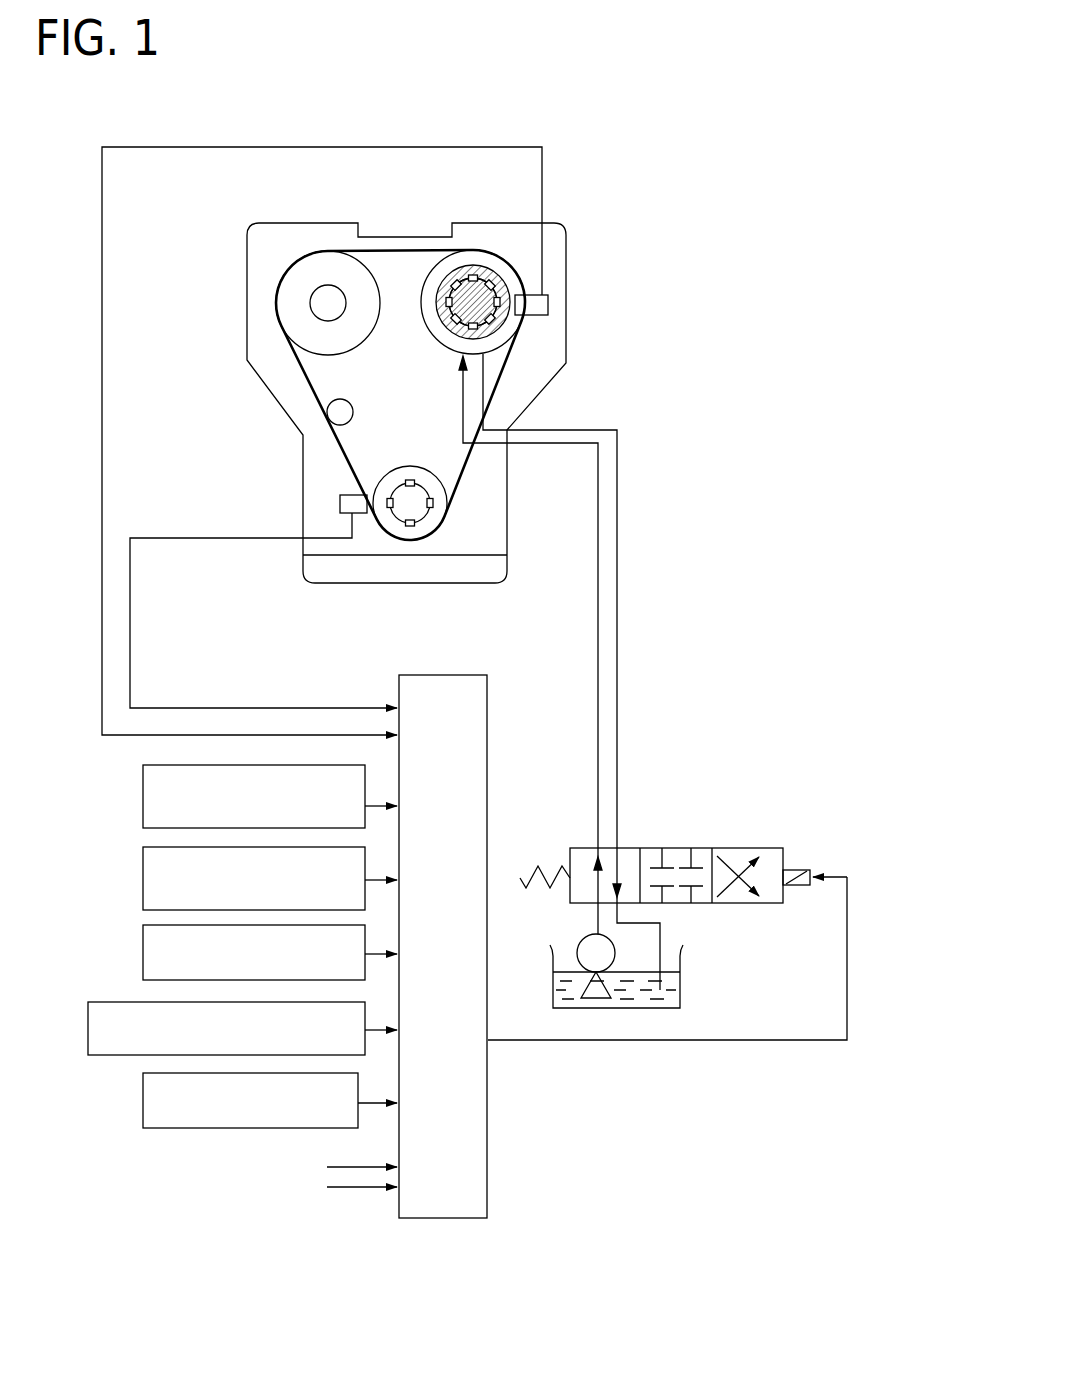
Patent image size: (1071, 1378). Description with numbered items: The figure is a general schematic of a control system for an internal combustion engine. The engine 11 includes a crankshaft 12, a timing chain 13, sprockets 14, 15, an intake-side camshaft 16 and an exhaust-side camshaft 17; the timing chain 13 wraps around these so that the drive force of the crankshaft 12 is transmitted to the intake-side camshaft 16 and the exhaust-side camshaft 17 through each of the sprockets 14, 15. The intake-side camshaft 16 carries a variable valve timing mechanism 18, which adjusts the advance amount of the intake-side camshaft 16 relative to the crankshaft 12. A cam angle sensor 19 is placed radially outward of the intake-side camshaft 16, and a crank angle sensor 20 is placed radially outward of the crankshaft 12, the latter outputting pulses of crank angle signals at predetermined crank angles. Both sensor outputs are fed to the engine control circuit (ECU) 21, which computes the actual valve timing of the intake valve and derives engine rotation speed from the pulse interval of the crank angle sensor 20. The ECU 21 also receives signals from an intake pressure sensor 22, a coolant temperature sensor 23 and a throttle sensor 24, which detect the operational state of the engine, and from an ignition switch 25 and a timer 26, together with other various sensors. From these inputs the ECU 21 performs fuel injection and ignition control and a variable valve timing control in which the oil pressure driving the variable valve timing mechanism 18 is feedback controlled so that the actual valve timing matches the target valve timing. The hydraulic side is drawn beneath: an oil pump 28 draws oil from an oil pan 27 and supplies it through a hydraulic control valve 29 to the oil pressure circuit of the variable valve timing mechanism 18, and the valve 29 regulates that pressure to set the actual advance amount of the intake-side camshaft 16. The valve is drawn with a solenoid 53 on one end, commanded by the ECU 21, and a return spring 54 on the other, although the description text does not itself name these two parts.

The engine 11 is at (399, 226).
The crankshaft 12 is at (414, 512).
The timing chain 13 is at (463, 473).
The sprocket 14 is at (482, 260).
The sprocket 15 is at (300, 278).
The intake-side camshaft 16 is at (470, 298).
The exhaust-side camshaft 17 is at (327, 303).
The variable valve timing mechanism 18 is at (502, 271).
The cam angle sensor 19 is at (548, 300).
The crank angle sensor 20 is at (340, 504).
The engine control circuit (ECU) 21 is at (487, 1143).
The intake pressure sensor 22 is at (143, 800).
The coolant temperature sensor 23 is at (143, 875).
The throttle sensor 24 is at (143, 950).
The ignition switch 25 is at (88, 1025).
The timer 26 is at (143, 1102).
The oil pan 27 is at (680, 982).
The oil pump 28 is at (580, 946).
The hydraulic control valve 29 is at (673, 848).
The solenoid 53 is at (797, 888).
The spring 54 is at (535, 866).